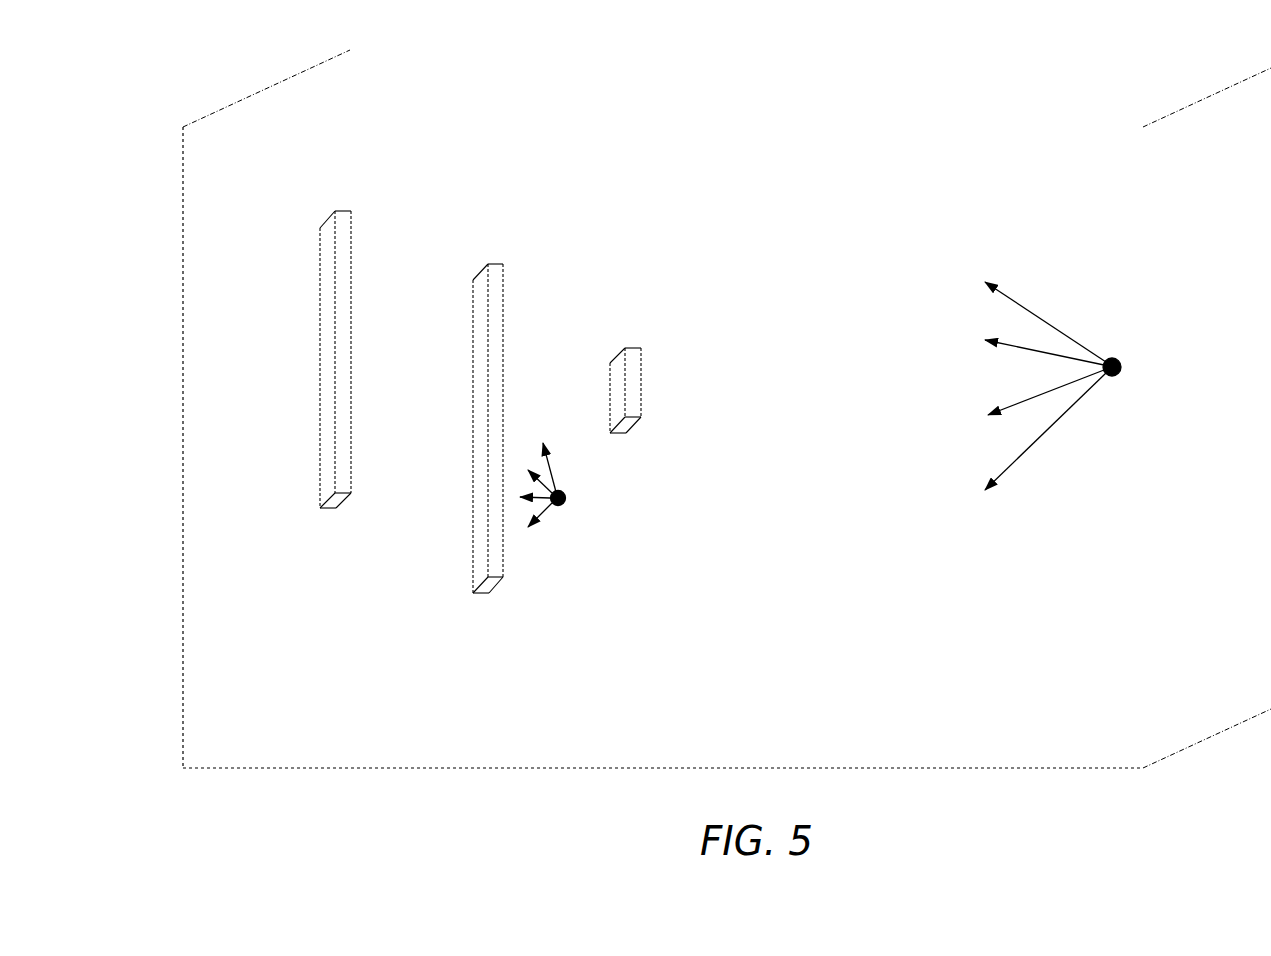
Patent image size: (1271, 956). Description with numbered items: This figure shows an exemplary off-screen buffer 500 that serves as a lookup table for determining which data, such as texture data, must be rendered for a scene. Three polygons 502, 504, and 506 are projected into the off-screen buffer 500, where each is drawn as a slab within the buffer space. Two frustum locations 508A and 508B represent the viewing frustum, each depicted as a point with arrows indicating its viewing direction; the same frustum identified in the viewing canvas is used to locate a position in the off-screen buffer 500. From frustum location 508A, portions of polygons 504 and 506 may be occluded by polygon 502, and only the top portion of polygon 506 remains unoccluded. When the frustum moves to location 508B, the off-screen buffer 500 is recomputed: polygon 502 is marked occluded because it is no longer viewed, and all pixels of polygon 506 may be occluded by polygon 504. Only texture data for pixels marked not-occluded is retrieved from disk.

The off-screen buffer 500 is at (952, 50).
The polygon 502 is at (631, 348).
The polygon 504 is at (495, 262).
The polygon 506 is at (341, 211).
The frustum location 508A is at (1114, 358).
The frustum location 508B is at (556, 506).